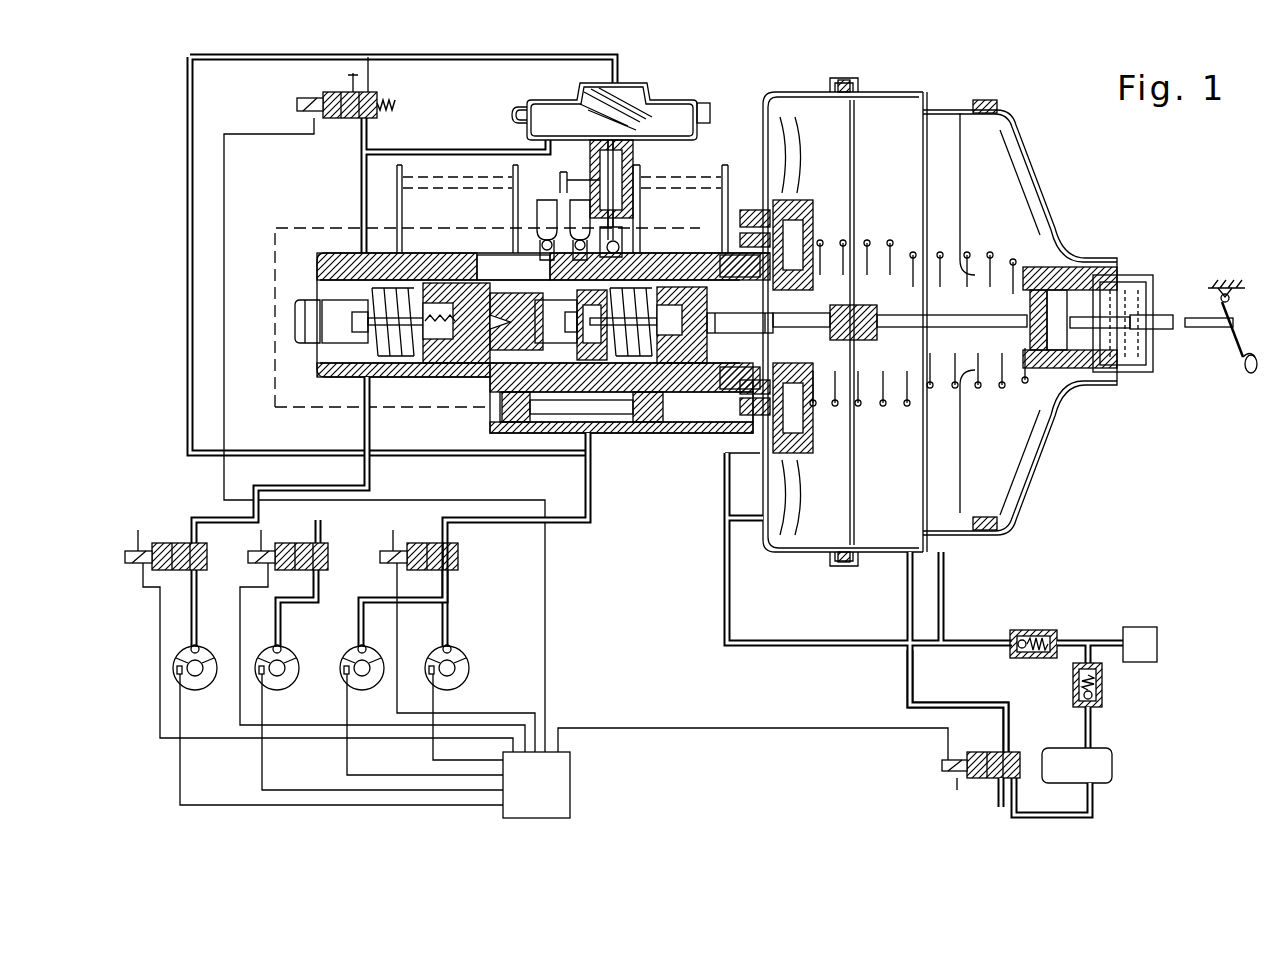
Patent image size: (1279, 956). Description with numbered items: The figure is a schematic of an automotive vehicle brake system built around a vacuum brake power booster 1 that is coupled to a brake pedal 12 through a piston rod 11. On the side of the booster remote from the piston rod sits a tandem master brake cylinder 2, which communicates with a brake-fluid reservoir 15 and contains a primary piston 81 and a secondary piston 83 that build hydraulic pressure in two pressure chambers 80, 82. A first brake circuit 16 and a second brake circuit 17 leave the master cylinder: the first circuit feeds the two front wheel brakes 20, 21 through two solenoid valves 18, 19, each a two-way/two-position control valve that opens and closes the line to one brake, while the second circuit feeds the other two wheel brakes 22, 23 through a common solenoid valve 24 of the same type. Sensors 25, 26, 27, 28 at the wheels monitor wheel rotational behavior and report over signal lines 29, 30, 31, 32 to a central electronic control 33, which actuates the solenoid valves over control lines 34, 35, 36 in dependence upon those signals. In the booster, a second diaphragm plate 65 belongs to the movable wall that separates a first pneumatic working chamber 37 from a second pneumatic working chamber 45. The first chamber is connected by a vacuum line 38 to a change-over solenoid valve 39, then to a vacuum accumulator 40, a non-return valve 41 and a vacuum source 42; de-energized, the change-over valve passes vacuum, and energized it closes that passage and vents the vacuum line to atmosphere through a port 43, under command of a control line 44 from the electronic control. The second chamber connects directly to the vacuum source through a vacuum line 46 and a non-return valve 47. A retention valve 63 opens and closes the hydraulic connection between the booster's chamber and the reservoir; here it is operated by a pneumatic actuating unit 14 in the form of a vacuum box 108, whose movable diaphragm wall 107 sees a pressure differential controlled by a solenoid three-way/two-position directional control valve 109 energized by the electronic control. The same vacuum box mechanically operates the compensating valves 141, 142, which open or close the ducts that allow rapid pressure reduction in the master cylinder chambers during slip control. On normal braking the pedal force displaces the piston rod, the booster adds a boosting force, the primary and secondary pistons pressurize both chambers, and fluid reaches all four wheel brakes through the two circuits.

The vacuum brake power booster 1 is at (988, 350).
The tandem master brake cylinder 2 is at (534, 370).
The piston rod 11 is at (1158, 330).
The brake pedal 12 is at (1238, 372).
The pneumatic actuating unit 14 is at (712, 105).
The brake-fluid reservoir 15 is at (733, 168).
The first brake circuit 16 is at (372, 473).
The second brake circuit 17 is at (592, 477).
The solenoid valve 18 is at (180, 542).
The solenoid valve 19 is at (328, 545).
The wheel brake 20 is at (200, 648).
The wheel brake 21 is at (283, 648).
The wheel brake 22 is at (368, 648).
The wheel brake 23 is at (453, 648).
The common solenoid valve 24 is at (434, 545).
The sensor 25 is at (177, 672).
The sensor 26 is at (259, 672).
The sensor 27 is at (344, 672).
The sensor 28 is at (429, 672).
The signal line 29 is at (180, 763).
The signal line 30 is at (262, 758).
The signal line 31 is at (347, 758).
The signal line 32 is at (433, 752).
The central electronic control 33 is at (570, 787).
The control line 34 is at (466, 738).
The control line 35 is at (497, 725).
The control line 36 is at (535, 708).
The first pneumatic working chamber 37 is at (876, 553).
The vacuum line 38 is at (972, 705).
The change-over solenoid valve 39 is at (1007, 752).
The vacuum accumulator 40 is at (1112, 765).
The non-return valve 41 is at (1103, 690).
The vacuum source 42 is at (1157, 640).
The port 43 is at (998, 798).
The control line 44 is at (848, 728).
The second pneumatic working chamber 45 is at (775, 553).
The vacuum line 46 is at (972, 640).
The non-return valve 47 is at (1040, 630).
The retention valve 63 is at (626, 245).
The second diaphragm plate 65 is at (818, 552).
The pressure chamber 80 is at (655, 357).
The primary piston 81 is at (706, 345).
The pressure chamber 82 is at (413, 357).
The secondary piston 83 is at (490, 357).
The movable diaphragm wall 107 is at (560, 125).
The vacuum box 108 is at (708, 95).
The solenoid three-way/two-position directional control valve 109 is at (380, 97).
The compensating valve 141 is at (570, 235).
The compensating valve 142 is at (535, 253).